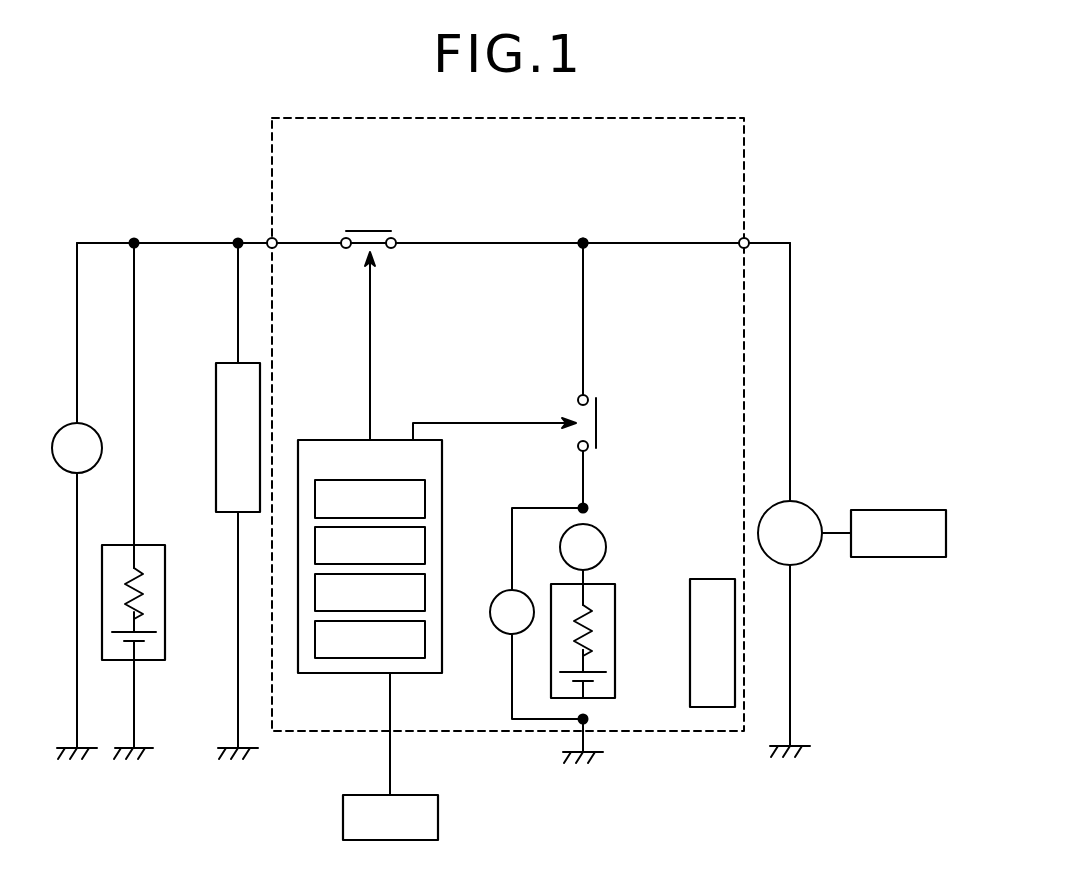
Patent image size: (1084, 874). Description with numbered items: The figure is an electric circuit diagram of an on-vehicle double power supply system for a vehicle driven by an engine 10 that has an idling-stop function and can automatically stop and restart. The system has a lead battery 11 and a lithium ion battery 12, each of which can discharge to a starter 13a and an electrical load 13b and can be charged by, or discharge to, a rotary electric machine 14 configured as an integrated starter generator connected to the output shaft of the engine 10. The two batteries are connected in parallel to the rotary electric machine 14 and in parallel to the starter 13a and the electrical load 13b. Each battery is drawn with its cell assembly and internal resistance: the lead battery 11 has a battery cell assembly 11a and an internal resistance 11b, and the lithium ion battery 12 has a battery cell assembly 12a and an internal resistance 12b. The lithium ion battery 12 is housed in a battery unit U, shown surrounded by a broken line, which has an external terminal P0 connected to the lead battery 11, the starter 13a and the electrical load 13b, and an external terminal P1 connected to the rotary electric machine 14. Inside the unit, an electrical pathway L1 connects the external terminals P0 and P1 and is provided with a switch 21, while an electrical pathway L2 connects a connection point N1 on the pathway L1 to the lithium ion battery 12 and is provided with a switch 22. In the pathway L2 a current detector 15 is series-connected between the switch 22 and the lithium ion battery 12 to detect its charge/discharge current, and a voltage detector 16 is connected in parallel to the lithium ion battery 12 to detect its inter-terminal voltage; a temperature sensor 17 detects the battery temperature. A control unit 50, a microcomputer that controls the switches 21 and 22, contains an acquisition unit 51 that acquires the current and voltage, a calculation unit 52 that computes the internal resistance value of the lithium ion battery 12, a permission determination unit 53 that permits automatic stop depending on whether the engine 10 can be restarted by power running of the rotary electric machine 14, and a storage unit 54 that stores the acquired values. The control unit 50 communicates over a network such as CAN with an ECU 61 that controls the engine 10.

The engine 10 is at (910, 510).
The lead battery 11 is at (169, 597).
The battery cell assembly of the lead battery 11a is at (148, 632).
The internal resistance of the lead battery 11b is at (140, 586).
The lithium ion battery 12 is at (619, 634).
The battery cell assembly of the lithium ion battery 12a is at (598, 672).
The internal resistance of the lithium ion battery 12b is at (588, 623).
The starter 13a is at (113, 410).
The electrical load 13b is at (228, 363).
The rotary electric machine 14 is at (812, 508).
The current detector 15 is at (603, 535).
The voltage detector 16 is at (527, 593).
The temperature sensor 17 is at (712, 579).
The switch 21 is at (369, 231).
The switch 22 is at (596, 423).
The control unit 50 is at (395, 534).
The acquisition unit 51 is at (425, 499).
The calculation unit 52 is at (425, 546).
The permission determination unit 53 is at (425, 593).
The storage unit 54 is at (425, 640).
The ECU 61 is at (420, 795).
The battery unit U is at (748, 133).
The external terminal P0 is at (270, 241).
The external terminal P1 is at (749, 240).
The connection point N1 is at (587, 240).
The electrical pathway L1 is at (533, 243).
The electrical pathway L2 is at (583, 301).